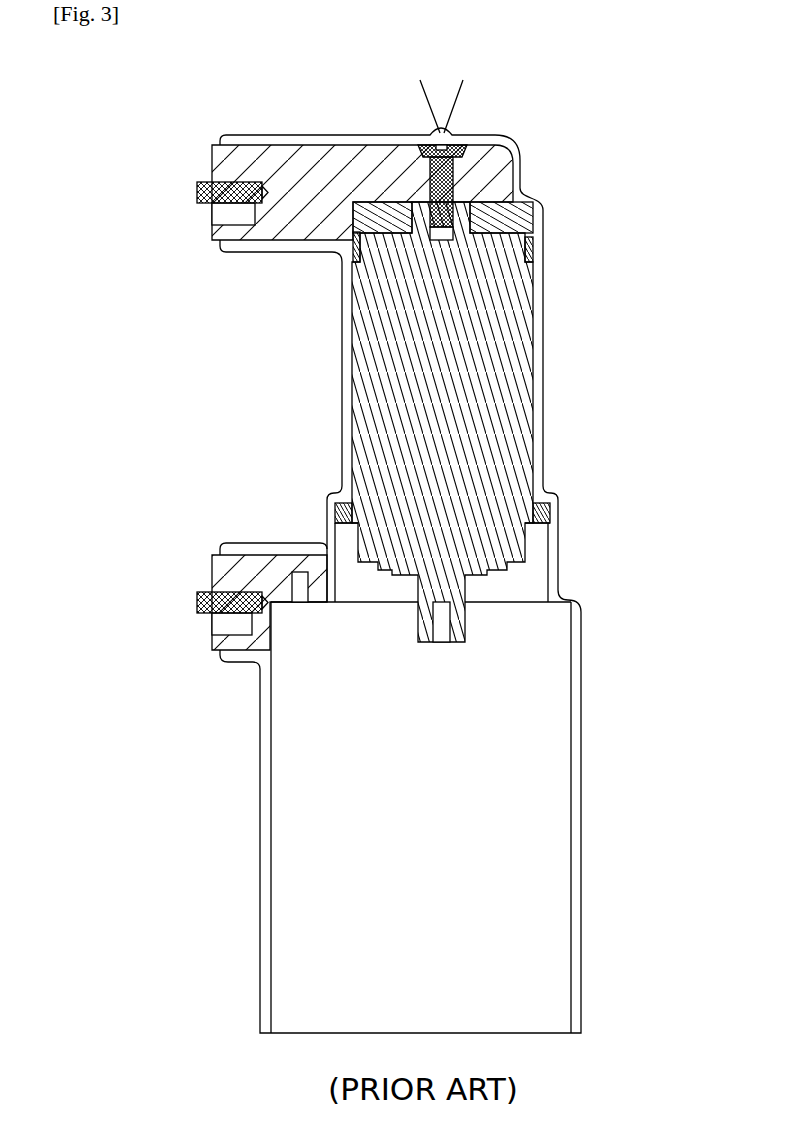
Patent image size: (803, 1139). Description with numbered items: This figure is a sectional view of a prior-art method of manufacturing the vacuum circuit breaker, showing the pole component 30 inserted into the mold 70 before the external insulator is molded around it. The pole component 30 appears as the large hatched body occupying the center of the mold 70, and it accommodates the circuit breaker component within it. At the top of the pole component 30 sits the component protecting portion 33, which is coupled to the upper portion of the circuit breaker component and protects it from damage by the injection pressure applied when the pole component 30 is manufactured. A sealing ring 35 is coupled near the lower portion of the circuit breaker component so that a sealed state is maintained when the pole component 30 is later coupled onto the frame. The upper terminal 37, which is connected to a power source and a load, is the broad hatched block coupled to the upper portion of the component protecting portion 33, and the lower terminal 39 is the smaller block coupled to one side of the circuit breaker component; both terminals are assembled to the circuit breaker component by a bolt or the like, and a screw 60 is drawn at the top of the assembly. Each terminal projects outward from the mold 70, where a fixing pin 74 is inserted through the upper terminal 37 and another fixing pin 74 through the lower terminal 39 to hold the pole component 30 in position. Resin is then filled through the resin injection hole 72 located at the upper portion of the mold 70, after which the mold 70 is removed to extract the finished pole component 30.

The pole component 30 is at (495, 352).
The component protecting portion 33 is at (511, 218).
The sealing ring 35 is at (556, 512).
The upper terminal 37 is at (311, 165).
The lower terminal 39 is at (262, 553).
The screw 60 is at (452, 174).
The mold 70 is at (590, 760).
The resin injection hole 72 is at (457, 100).
The fixing pin 74 is at (197, 192).